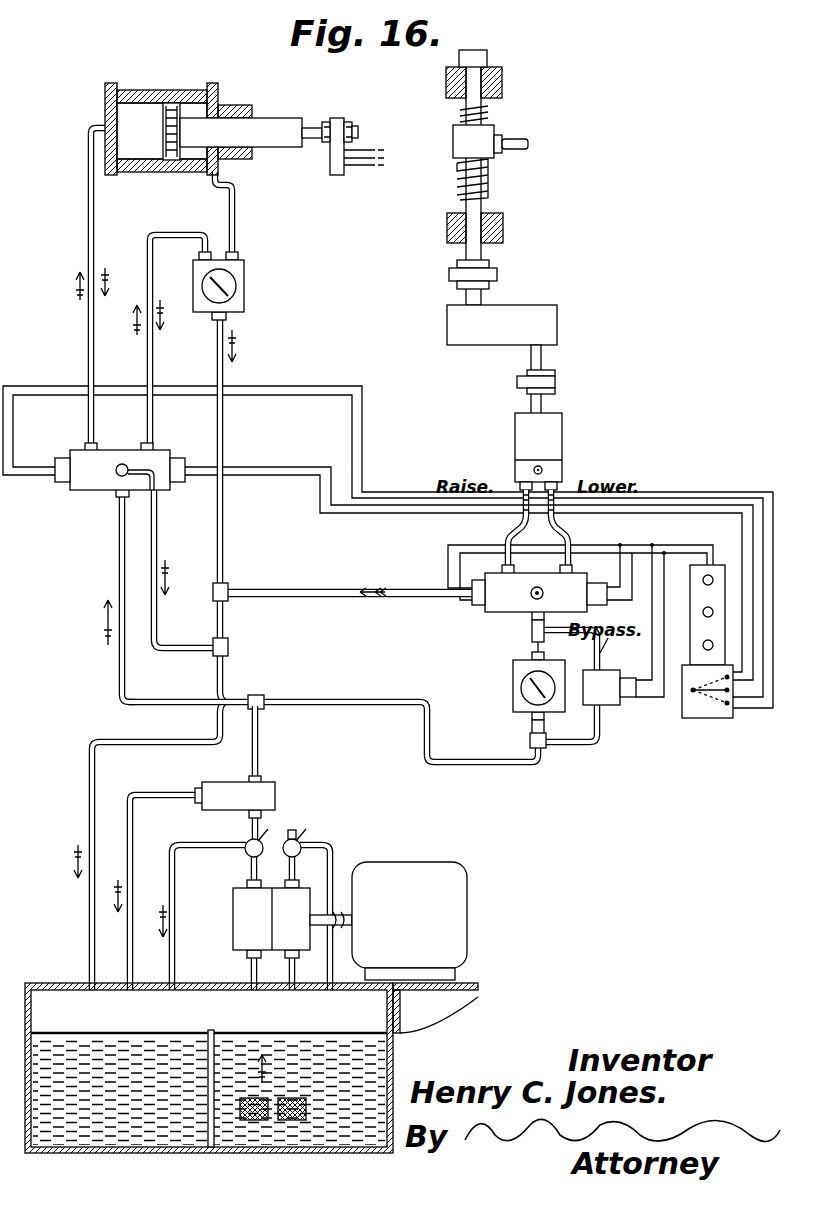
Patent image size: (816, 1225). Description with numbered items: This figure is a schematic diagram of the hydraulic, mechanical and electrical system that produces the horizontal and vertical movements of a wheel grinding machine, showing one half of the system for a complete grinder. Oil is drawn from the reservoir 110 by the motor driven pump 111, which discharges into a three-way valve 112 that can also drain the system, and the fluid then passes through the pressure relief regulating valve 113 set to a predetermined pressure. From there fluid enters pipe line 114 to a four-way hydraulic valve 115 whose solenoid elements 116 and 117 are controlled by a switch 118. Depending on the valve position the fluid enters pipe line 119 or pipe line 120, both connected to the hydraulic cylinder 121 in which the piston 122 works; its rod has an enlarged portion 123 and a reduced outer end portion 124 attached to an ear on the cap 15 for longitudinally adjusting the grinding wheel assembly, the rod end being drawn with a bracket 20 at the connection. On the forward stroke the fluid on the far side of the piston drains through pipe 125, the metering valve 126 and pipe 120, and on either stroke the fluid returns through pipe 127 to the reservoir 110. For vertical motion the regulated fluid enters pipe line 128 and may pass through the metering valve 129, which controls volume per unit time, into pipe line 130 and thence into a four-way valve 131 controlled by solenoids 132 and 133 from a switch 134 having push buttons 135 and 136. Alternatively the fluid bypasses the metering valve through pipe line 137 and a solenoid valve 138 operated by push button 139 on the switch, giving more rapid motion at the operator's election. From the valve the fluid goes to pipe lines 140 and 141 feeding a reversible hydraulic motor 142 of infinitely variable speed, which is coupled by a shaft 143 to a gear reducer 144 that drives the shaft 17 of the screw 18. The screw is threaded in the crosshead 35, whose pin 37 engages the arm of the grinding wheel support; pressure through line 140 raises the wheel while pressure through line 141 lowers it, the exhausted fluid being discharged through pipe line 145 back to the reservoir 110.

The cap 15 is at (362, 160).
The shaft 17 is at (483, 203).
The screw 18 is at (459, 183).
The bracket 20 is at (336, 118).
The crosshead 35 is at (462, 141).
The pin 37 is at (530, 139).
The reservoir 110 is at (393, 1051).
The motor driven pump 111 is at (244, 917).
The 3-way valve 112 is at (249, 851).
The pressure relief regulating valve 113 is at (262, 793).
The pipe line 114 is at (352, 705).
The 4-way hydraulic valve 115 is at (102, 485).
The electrical solenoid element 116 is at (59, 481).
The electrical solenoid element 117 is at (179, 478).
The switch 118 is at (719, 718).
The pipe line 119 is at (91, 208).
The pipe line 120 is at (150, 407).
The hydraulic cylinder 121 is at (158, 93).
The piston 122 is at (162, 152).
The enlarged portion 123 is at (273, 122).
The reduced outer end portion 124 is at (358, 130).
The pipe 125 is at (238, 228).
The metering valve 126 is at (247, 288).
The pipe 127 is at (156, 598).
The pipe line 128 is at (532, 749).
The metering valve 129 is at (520, 674).
The pipe line 130 is at (534, 627).
The 4-way valve 131 is at (487, 610).
The solenoid 132 is at (470, 582).
The solenoid 133 is at (597, 578).
The switch 134 is at (722, 563).
The push button 135 is at (707, 563).
The push button 136 is at (705, 647).
The pipe line 137 is at (575, 746).
The solenoid valve 138 is at (626, 706).
The push button 139 is at (708, 614).
The pipe line 140 is at (517, 517).
The pipe line 141 is at (559, 594).
The hydraulic motor 142 is at (556, 445).
The shaft 143 is at (544, 405).
The gear reducer 144 is at (495, 336).
The pipe line 145 is at (371, 597).